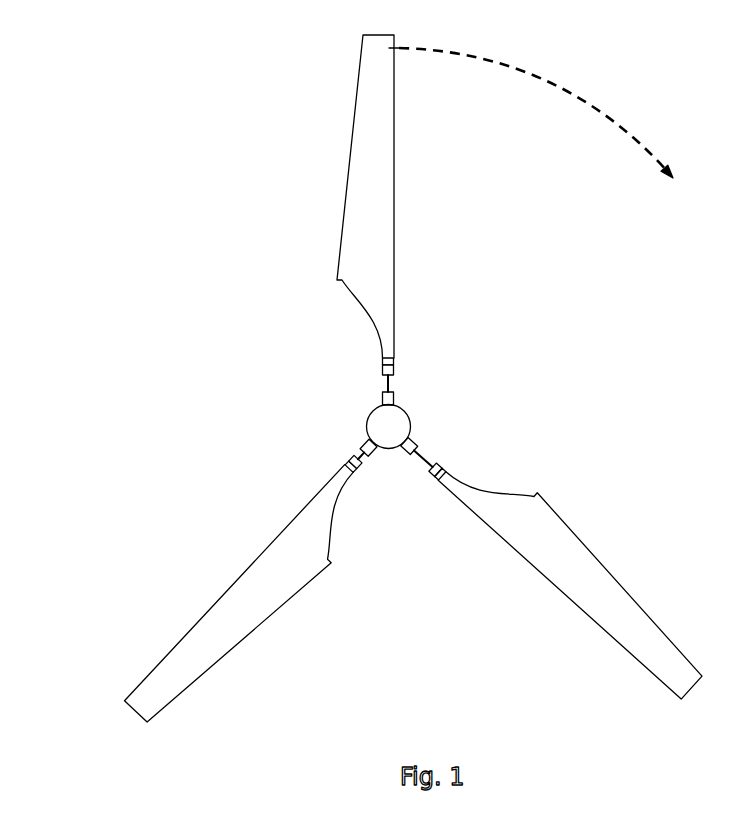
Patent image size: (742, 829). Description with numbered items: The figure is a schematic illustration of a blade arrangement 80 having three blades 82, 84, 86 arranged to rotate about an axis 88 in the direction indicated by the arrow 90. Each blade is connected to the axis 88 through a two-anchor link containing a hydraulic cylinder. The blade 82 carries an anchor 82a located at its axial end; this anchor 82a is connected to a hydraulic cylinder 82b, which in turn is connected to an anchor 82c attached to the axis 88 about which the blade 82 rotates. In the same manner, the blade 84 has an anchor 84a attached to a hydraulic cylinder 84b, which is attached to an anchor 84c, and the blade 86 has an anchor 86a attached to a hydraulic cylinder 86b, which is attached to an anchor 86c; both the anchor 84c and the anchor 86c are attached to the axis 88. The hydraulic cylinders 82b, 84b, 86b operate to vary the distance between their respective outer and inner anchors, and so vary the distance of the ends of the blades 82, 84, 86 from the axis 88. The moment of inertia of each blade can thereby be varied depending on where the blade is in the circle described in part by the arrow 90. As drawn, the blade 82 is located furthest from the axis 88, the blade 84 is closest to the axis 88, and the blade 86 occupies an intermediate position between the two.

The blade arrangement 80 is at (371, 378).
The blade 82 is at (580, 550).
The anchor 82a is at (442, 466).
The hydraulic cylinder 82b is at (425, 456).
The anchor 82c is at (411, 432).
The blade 84 is at (287, 585).
The anchor 84a is at (356, 460).
The hydraulic cylinder 84b is at (367, 456).
The anchor 84c is at (365, 440).
The blade 86 is at (357, 146).
The anchor 86a is at (382, 358).
The hydraulic cylinder 86b is at (394, 373).
The anchor 86c is at (382, 394).
The axis 88 is at (392, 434).
The arrow 90 is at (603, 104).